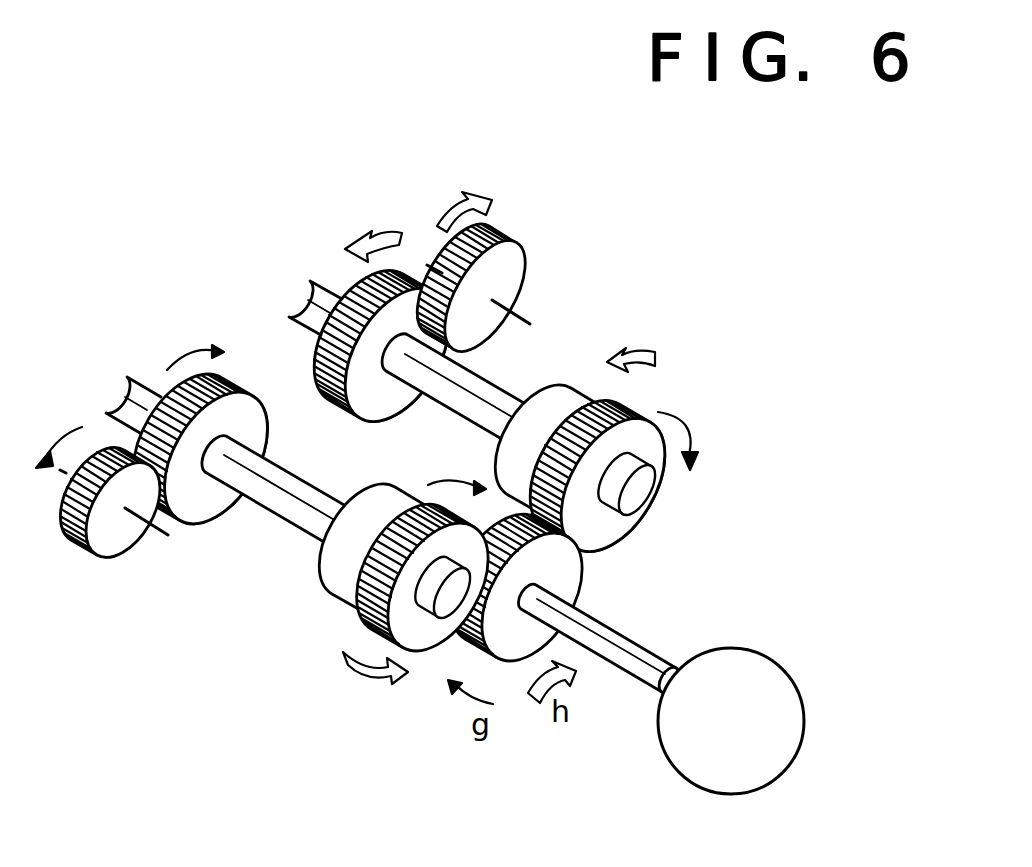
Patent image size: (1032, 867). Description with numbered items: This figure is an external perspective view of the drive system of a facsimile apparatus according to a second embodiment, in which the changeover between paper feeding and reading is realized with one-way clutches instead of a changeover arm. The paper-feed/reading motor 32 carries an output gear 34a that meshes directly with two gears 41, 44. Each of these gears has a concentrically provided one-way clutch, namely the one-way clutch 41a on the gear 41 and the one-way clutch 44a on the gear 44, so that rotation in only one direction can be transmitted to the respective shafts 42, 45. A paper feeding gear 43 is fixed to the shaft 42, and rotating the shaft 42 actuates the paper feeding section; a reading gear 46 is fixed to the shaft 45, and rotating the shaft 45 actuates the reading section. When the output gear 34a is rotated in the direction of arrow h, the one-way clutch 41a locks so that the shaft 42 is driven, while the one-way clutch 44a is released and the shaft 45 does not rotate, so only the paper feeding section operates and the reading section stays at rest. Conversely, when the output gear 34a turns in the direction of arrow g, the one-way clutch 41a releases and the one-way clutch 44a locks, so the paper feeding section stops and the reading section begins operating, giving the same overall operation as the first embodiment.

The paper-feed/reading motor 32 is at (806, 724).
The output gear 34a is at (574, 603).
The gear 41 is at (653, 440).
The one-way clutch 41a is at (563, 393).
The shaft 42 is at (490, 393).
The paper feeding gear 43 is at (438, 325).
The gear 44 is at (402, 625).
The one-way clutch 44a is at (338, 560).
The shaft 45 is at (272, 500).
The reading gear 46 is at (237, 420).